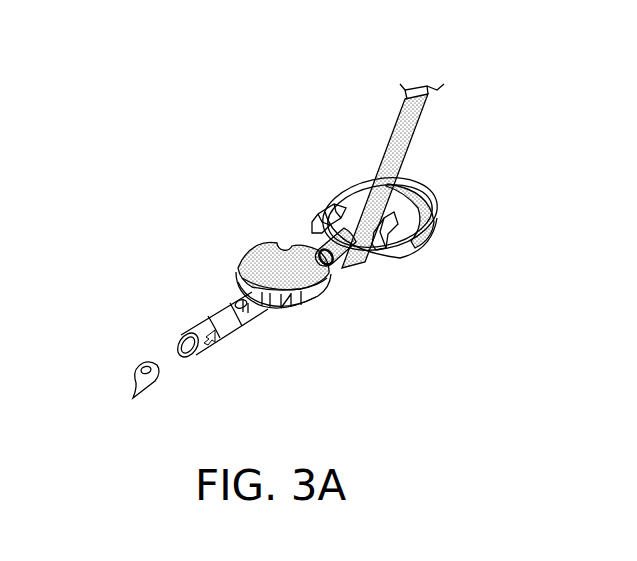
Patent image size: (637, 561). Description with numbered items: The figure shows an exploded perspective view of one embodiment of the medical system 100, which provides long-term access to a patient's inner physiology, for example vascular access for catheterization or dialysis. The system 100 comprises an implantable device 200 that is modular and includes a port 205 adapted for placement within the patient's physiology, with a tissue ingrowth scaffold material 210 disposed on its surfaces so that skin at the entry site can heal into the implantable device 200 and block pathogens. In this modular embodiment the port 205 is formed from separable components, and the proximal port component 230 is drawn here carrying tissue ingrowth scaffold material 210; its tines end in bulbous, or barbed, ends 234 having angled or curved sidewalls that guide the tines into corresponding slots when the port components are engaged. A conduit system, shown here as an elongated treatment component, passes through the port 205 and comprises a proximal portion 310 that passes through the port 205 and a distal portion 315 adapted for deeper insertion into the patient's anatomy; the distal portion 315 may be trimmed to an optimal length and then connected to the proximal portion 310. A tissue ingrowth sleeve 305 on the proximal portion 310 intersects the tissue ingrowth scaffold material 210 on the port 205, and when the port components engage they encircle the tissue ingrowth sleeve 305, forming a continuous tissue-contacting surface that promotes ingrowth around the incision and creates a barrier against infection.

The system 100 is at (82, 80).
The implantable device 200 is at (270, 331).
The port 205 is at (322, 292).
The tissue ingrowth scaffold material 210 is at (268, 249).
The proximal port component 230 is at (497, 200).
The bulbous end 234 is at (312, 228).
The tissue ingrowth sleeve 305 is at (388, 148).
The proximal portion 310 is at (238, 309).
The distal portion 315 is at (142, 362).